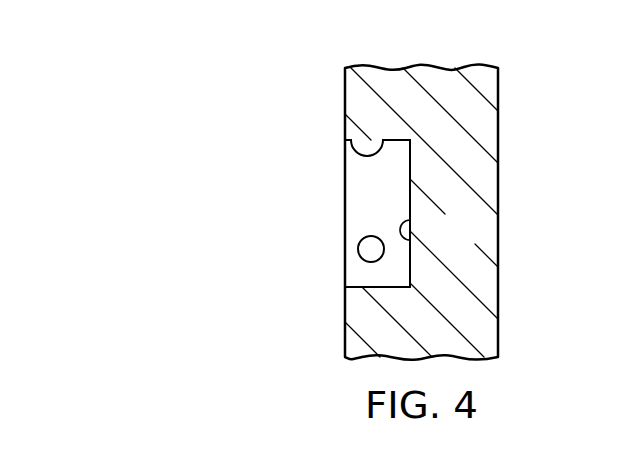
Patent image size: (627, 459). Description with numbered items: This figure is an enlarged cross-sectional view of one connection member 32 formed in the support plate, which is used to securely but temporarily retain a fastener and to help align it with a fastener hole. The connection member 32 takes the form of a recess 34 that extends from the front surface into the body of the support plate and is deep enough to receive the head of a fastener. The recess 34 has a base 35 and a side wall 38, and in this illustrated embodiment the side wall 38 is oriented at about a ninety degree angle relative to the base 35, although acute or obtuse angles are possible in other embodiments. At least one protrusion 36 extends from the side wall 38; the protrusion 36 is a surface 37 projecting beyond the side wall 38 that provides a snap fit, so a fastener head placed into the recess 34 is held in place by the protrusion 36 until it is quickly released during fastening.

The connection member 32 is at (522, 117).
The recess 34 is at (355, 197).
The base 35 is at (412, 238).
The protrusion 36 is at (348, 151).
The surface 37 is at (367, 236).
The side wall 38 is at (393, 148).